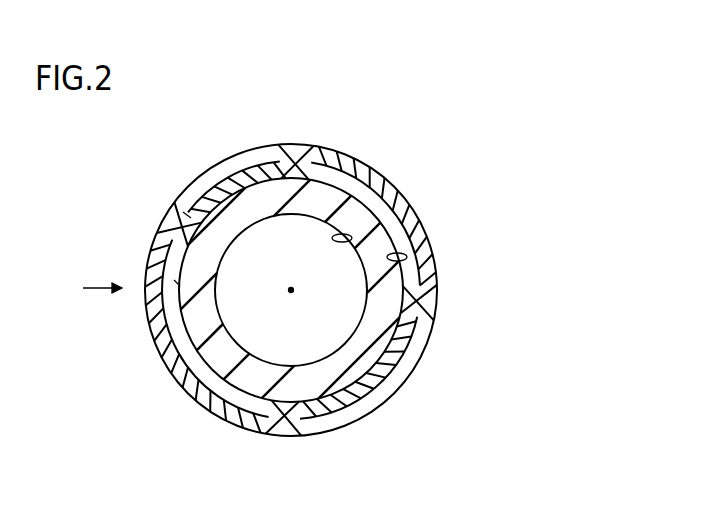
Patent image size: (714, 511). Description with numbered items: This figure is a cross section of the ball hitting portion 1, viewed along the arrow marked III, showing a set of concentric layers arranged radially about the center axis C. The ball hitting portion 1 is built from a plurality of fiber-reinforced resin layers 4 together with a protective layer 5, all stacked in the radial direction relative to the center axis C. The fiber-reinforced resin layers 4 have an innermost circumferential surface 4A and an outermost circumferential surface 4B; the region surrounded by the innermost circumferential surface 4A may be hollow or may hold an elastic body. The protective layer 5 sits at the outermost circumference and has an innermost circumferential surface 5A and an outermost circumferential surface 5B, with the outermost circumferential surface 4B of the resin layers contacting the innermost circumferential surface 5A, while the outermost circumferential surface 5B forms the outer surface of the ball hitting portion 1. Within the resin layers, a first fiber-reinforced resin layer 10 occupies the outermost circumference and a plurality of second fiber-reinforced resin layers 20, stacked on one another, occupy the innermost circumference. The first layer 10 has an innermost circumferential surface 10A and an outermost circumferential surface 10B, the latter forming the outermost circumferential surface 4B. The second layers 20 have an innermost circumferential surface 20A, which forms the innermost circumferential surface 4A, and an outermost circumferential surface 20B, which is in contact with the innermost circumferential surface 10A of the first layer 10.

The ball hitting portion 1 is at (421, 166).
The fiber-reinforced resin layers 4 is at (360, 101).
The protective layer 5 is at (240, 162).
The first fiber-reinforced resin layer 10 is at (287, 165).
The second fiber-reinforced resin layers 20 is at (330, 192).
The innermost circumferential surface 4A is at (352, 238).
The innermost circumferential surface 20A is at (342, 238).
The outermost circumferential surface 4B is at (187, 215).
The outermost circumferential surface 10B is at (187, 215).
The innermost circumferential surface 10A is at (405, 256).
The outermost circumferential surface 20B is at (177, 283).
The innermost circumferential surface 5A is at (425, 285).
The outermost circumferential surface 5B is at (197, 177).
The center axis C is at (291, 297).
The section line III is at (88, 293).